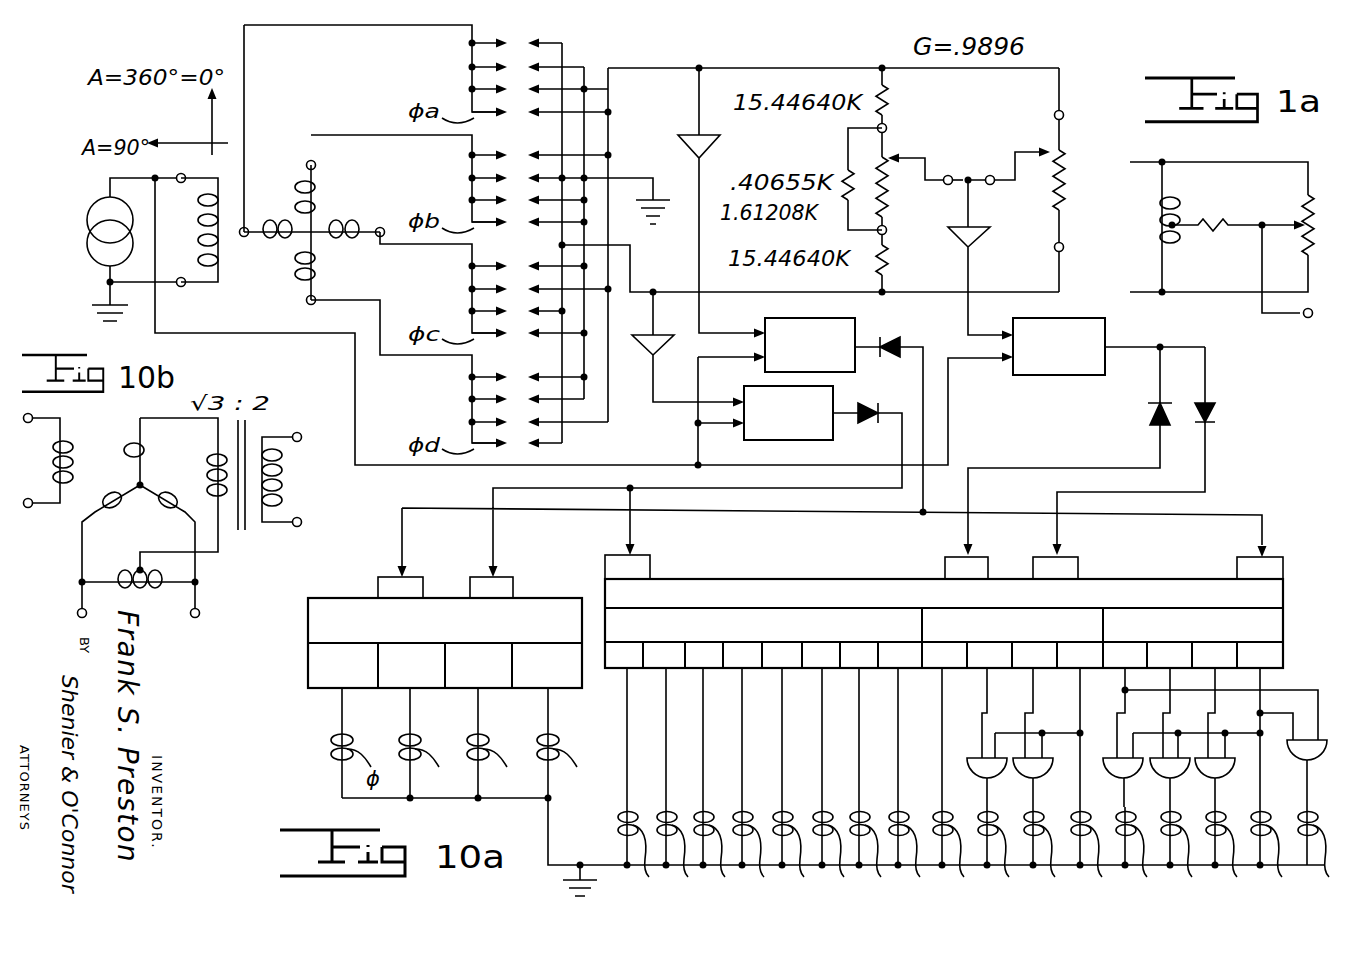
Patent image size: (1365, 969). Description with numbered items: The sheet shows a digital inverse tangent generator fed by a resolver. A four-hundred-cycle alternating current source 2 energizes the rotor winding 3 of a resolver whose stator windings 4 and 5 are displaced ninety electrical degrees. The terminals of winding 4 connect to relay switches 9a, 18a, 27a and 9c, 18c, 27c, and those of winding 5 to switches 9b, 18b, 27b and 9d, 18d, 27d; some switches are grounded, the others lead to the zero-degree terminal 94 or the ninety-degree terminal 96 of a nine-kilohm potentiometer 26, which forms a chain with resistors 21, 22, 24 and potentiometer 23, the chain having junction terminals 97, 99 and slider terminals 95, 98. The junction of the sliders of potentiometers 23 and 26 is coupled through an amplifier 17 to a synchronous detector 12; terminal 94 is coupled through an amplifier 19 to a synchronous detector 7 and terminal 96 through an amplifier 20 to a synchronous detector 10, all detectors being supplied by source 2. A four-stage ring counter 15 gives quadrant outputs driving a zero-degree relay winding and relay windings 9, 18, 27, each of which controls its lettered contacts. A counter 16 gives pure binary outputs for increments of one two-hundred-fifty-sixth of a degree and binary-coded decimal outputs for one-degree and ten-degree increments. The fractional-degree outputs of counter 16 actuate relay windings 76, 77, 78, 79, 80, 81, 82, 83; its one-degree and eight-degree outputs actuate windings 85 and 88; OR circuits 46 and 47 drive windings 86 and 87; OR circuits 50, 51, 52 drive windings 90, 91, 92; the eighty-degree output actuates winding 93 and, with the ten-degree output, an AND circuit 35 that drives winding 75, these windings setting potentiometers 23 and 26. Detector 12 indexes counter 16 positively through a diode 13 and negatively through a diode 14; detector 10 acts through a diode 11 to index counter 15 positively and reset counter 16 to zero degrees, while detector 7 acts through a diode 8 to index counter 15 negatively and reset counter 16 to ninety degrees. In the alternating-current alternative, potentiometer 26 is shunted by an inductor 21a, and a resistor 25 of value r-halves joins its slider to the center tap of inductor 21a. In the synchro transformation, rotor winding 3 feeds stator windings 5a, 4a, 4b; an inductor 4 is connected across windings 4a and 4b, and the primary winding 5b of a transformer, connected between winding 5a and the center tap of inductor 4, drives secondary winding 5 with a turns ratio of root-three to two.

In FIG. 10a, the alternating current source 2 is at (89, 243).
In FIG. 10a, the rotor winding 3 is at (201, 230).
In FIG. 10b, the rotor winding 3 is at (52, 459).
In FIG. 10a, the stator winding 4 is at (278, 234).
In FIG. 10b, the stator winding 4 is at (120, 564).
In FIG. 10b, the stator winding 4a is at (105, 494).
In FIG. 10b, the stator winding 4b is at (152, 514).
In FIG. 10a, the stator winding 5 is at (318, 194).
In FIG. 10b, the stator winding 5 is at (284, 478).
In FIG. 10b, the stator winding 5a is at (152, 448).
In FIG. 10b, the primary winding 5b is at (210, 466).
In FIG. 10a, the synchronous detector 7 is at (850, 320).
In FIG. 10a, the diode 8 is at (895, 360).
In FIG. 10a, the relay winding 9 is at (422, 762).
In FIG. 10a, the relay switch 9a is at (472, 88).
In FIG. 10a, the relay switch 9b is at (472, 198).
In FIG. 10a, the relay switch 9c is at (472, 309).
In FIG. 10a, the relay switch 9d is at (472, 420).
In FIG. 10a, the synchronous detector 10 is at (790, 444).
In FIG. 10a, the diode 11 is at (860, 426).
In FIG. 10a, the synchronous detector 12 is at (1050, 378).
In FIG. 10a, the diode 13 is at (1215, 408).
In FIG. 10a, the diode 14 is at (1150, 426).
In FIG. 10a, the four-stage ring counter 15 is at (312, 600).
In FIG. 10a, the counter 16 is at (1138, 584).
In FIG. 10a, the amplifier 17 is at (992, 244).
In FIG. 10a, the relay winding 18 is at (495, 762).
In FIG. 10a, the relay switch 18a is at (470, 66).
In FIG. 10a, the relay switch 18b is at (470, 176).
In FIG. 10a, the relay switch 18c is at (470, 287).
In FIG. 10a, the relay switch 18d is at (470, 397).
In FIG. 10a, the amplifier 19 is at (684, 128).
In FIG. 10a, the amplifier 20 is at (670, 332).
In FIG. 10a, the resistor 21 is at (890, 98).
In FIG. 1a, the inductor 21a is at (1156, 256).
In FIG. 10a, the resistor 22 is at (890, 262).
In FIG. 10a, the potentiometer 23 is at (892, 183).
In FIG. 10a, the resistor 24 is at (846, 171).
In FIG. 1a, the resistor 25 is at (1215, 231).
In FIG. 10a, the potentiometer 26 is at (1052, 187).
In FIG. 1a, the potentiometer 26 is at (1302, 258).
In FIG. 10a, the relay winding 27 is at (564, 762).
In FIG. 10a, the relay switch 27a is at (472, 42).
In FIG. 10a, the relay switch 27b is at (470, 153).
In FIG. 10a, the relay switch 27c is at (470, 264).
In FIG. 10a, the relay switch 27d is at (470, 375).
In FIG. 10a, the AND circuit 35 is at (1288, 770).
In FIG. 10a, the OR circuit 46 is at (1002, 778).
In FIG. 10a, the OR circuit 47 is at (1048, 778).
In FIG. 10a, the OR circuit 50 is at (1138, 778).
In FIG. 10a, the OR circuit 51 is at (1185, 778).
In FIG. 10a, the OR circuit 52 is at (1232, 778).
In FIG. 10a, the relay winding 75 is at (1313, 858).
In FIG. 10a, the relay winding 76 is at (638, 788).
In FIG. 10a, the relay winding 77 is at (678, 788).
In FIG. 10a, the relay winding 78 is at (715, 788).
In FIG. 10a, the relay winding 79 is at (753, 788).
In FIG. 10a, the relay winding 80 is at (791, 788).
In FIG. 10a, the relay winding 81 is at (830, 788).
In FIG. 10a, the relay winding 82 is at (869, 789).
In FIG. 10a, the relay winding 83 is at (908, 789).
In FIG. 10a, the relay winding 85 is at (950, 789).
In FIG. 10a, the relay winding 86 is at (995, 858).
In FIG. 10a, the relay winding 87 is at (1041, 858).
In FIG. 10a, the relay winding 88 is at (1087, 789).
In FIG. 10a, the relay winding 90 is at (1132, 858).
In FIG. 10a, the relay winding 91 is at (1177, 858).
In FIG. 10a, the relay winding 92 is at (1221, 858).
In FIG. 10a, the relay winding 93 is at (1266, 789).
In FIG. 10a, the 0° terminal 94 is at (1054, 114).
In FIG. 10a, the terminal 95 is at (992, 176).
In FIG. 10a, the 90° terminal 96 is at (1054, 252).
In FIG. 10a, the terminal 97 is at (888, 126).
In FIG. 10a, the terminal 98 is at (948, 176).
In FIG. 10a, the terminal 99 is at (888, 232).